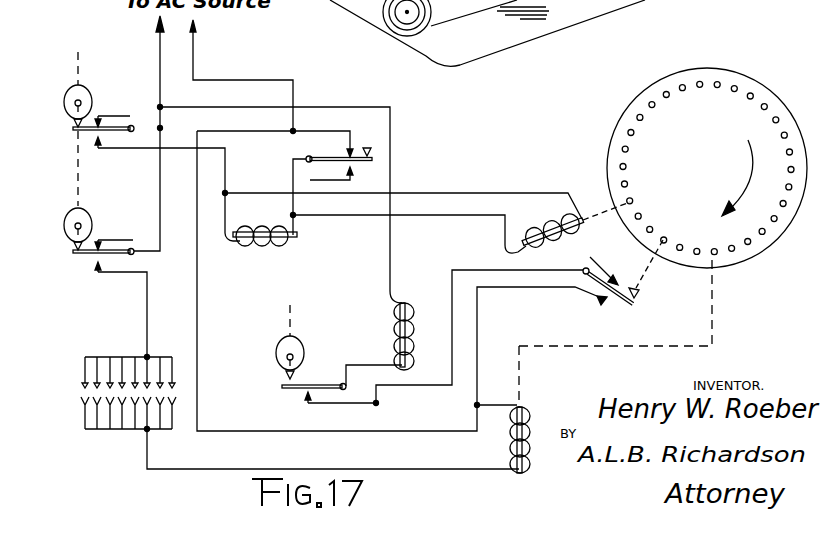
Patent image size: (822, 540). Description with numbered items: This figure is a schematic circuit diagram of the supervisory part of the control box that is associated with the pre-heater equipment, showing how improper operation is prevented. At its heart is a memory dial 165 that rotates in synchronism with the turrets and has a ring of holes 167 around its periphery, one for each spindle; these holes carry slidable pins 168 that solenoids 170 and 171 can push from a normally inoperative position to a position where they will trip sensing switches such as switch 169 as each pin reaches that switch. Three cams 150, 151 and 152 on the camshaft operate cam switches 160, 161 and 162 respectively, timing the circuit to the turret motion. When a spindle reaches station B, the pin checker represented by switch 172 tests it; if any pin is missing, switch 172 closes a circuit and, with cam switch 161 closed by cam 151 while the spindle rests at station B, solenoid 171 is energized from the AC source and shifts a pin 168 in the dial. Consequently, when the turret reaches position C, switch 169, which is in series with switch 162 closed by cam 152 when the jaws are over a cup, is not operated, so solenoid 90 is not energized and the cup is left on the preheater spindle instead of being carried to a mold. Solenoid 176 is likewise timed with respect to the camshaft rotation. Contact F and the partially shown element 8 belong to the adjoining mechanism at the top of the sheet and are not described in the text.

The cam 150 is at (90, 97).
The cam 151 is at (90, 226).
The cam 152 is at (300, 351).
The cam switch 160 is at (88, 142).
The cam switch 161 is at (93, 264).
The cam switch 162 is at (302, 392).
The memory dial 165 is at (780, 99).
The holes 167 is at (627, 186).
The slidable pins 168 is at (642, 217).
The sensing switch 169 is at (641, 298).
The solenoid 170 is at (528, 233).
The solenoid 171 is at (530, 430).
The pin checker switch 172 is at (128, 384).
The solenoid 176 is at (265, 226).
The solenoid 90 is at (399, 336).
The arm 8 is at (699, 0).
The contact F is at (634, 202).
The station C is at (672, 234).
The station B is at (714, 236).